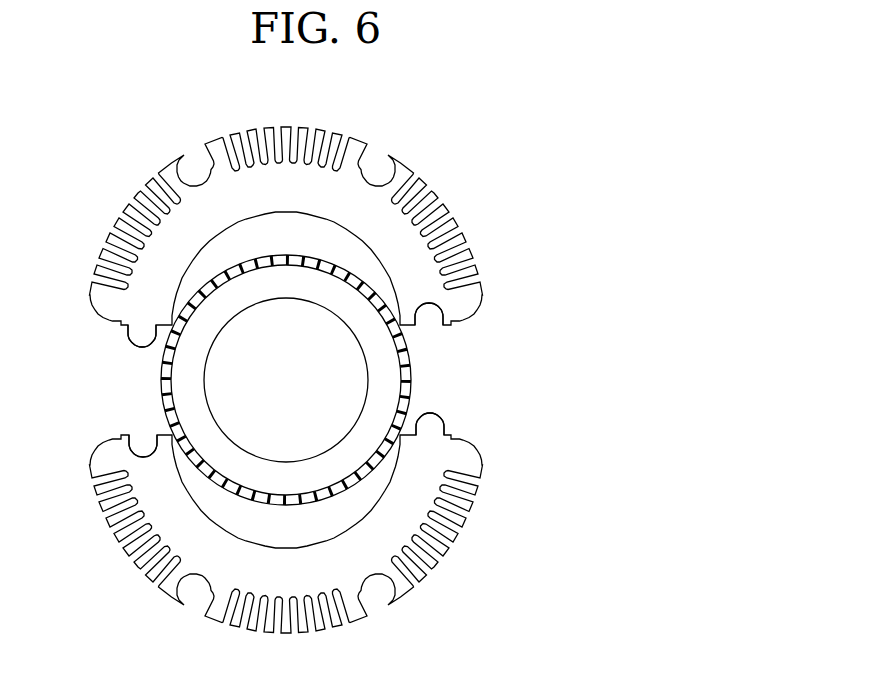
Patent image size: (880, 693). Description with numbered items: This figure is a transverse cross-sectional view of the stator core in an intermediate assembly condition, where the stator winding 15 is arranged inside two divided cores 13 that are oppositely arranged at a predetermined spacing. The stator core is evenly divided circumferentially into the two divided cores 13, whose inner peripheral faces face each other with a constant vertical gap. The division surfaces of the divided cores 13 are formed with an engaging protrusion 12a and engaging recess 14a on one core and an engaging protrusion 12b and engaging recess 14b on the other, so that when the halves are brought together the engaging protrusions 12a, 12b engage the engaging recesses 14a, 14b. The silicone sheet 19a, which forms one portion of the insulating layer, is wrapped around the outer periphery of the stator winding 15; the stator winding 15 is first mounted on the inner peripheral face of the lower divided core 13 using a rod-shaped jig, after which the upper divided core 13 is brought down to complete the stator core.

The divided core 13 is at (478, 191).
The stator winding 15 is at (190, 389).
The silicone sheet 19a is at (412, 371).
The engaging protrusion 12a is at (143, 343).
The engaging protrusion 12b is at (432, 423).
The engaging recess 14a is at (430, 306).
The engaging recess 14b is at (144, 454).